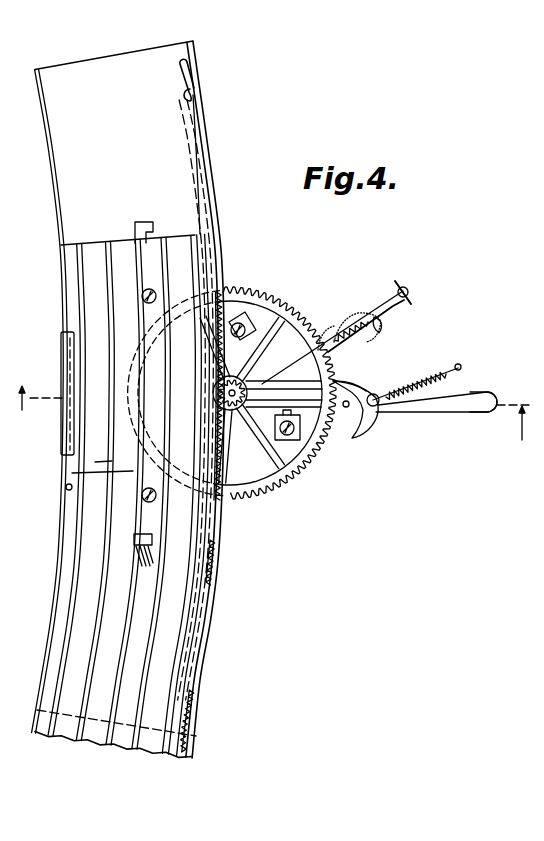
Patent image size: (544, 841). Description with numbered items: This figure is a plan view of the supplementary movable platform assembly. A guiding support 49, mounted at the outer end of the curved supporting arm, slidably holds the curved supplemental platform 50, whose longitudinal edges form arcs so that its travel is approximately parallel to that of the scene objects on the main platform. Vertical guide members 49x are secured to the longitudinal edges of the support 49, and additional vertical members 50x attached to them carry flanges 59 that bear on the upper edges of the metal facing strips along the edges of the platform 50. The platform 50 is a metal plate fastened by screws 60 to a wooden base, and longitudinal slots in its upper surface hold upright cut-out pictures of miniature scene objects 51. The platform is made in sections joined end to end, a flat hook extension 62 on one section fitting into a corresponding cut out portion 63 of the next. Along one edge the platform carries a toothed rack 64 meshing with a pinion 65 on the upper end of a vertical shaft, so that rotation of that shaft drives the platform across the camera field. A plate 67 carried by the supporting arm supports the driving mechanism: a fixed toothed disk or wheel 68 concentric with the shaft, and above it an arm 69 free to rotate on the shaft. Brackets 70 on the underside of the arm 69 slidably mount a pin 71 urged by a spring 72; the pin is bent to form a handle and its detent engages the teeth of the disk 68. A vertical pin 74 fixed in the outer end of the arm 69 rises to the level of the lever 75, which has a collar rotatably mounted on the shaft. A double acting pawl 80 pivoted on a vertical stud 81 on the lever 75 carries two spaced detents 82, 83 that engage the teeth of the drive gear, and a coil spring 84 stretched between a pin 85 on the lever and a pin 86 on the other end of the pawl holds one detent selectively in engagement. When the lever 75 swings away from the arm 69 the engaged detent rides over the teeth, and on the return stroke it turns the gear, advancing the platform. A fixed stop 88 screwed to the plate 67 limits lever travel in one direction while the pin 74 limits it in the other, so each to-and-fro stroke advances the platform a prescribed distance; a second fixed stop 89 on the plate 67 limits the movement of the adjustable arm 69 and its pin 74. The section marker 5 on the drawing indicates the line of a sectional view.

The guiding support 49 is at (68, 164).
The vertical guide members 49x is at (199, 95).
The supplemental platform 50 is at (90, 513).
The additional vertical members 50x is at (62, 350).
The miniature scene objects 51 is at (105, 465).
The flanges 59 is at (205, 204).
The screws 60 is at (146, 292).
The flat hook extension 62 is at (140, 222).
The cut out portion 63 is at (135, 542).
The toothed rack 64 is at (216, 411).
The pinion 65 is at (250, 378).
The plate 67 is at (279, 472).
The fixed disk or wheel 68 is at (302, 467).
The arm 69 is at (381, 300).
The brackets 70 is at (348, 306).
The pin 71 is at (386, 312).
The spring 72 is at (343, 320).
The vertical pin 74 is at (406, 290).
The lever 75 is at (490, 394).
The double acting pawl 80 is at (402, 397).
The vertical stud 81 is at (377, 410).
The detent 82 is at (362, 434).
The detent 83 is at (345, 380).
The coil spring 84 is at (393, 388).
The pin 85 is at (347, 407).
The pin 86 is at (461, 366).
The fixed stop 88 is at (290, 441).
The fixed stop 89 is at (247, 334).
The section line 5 is at (275, 401).